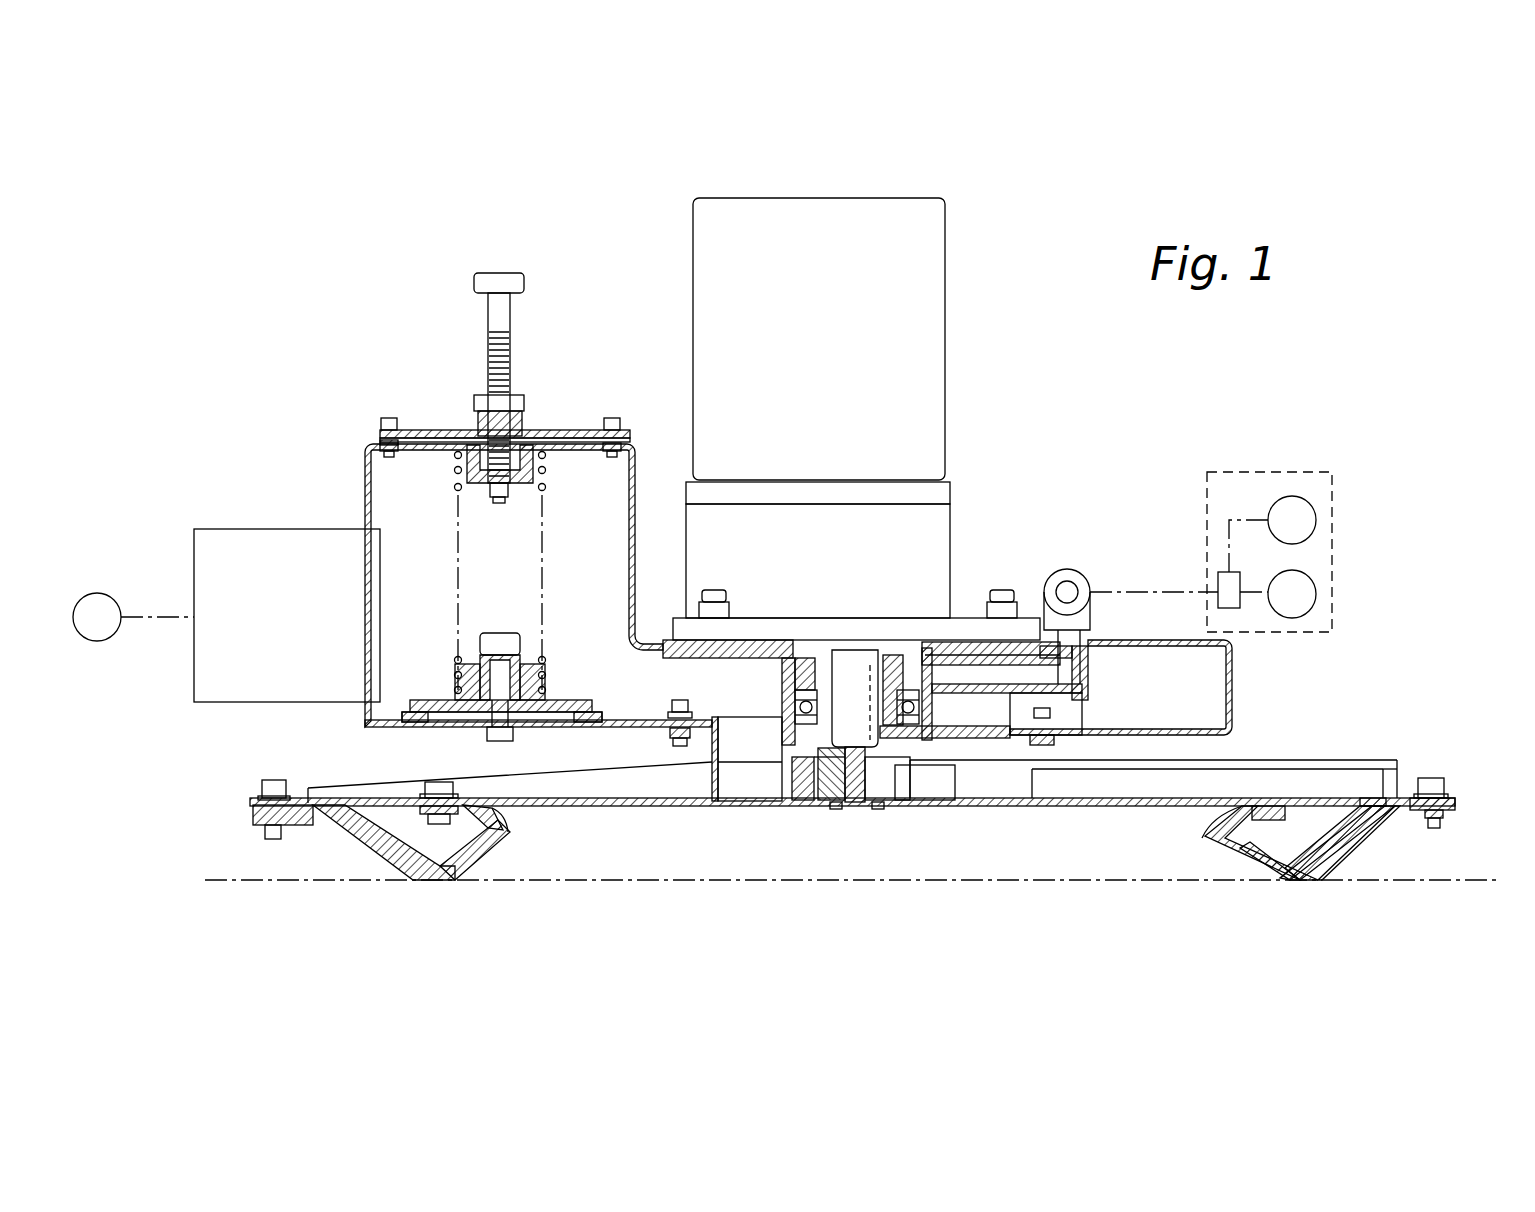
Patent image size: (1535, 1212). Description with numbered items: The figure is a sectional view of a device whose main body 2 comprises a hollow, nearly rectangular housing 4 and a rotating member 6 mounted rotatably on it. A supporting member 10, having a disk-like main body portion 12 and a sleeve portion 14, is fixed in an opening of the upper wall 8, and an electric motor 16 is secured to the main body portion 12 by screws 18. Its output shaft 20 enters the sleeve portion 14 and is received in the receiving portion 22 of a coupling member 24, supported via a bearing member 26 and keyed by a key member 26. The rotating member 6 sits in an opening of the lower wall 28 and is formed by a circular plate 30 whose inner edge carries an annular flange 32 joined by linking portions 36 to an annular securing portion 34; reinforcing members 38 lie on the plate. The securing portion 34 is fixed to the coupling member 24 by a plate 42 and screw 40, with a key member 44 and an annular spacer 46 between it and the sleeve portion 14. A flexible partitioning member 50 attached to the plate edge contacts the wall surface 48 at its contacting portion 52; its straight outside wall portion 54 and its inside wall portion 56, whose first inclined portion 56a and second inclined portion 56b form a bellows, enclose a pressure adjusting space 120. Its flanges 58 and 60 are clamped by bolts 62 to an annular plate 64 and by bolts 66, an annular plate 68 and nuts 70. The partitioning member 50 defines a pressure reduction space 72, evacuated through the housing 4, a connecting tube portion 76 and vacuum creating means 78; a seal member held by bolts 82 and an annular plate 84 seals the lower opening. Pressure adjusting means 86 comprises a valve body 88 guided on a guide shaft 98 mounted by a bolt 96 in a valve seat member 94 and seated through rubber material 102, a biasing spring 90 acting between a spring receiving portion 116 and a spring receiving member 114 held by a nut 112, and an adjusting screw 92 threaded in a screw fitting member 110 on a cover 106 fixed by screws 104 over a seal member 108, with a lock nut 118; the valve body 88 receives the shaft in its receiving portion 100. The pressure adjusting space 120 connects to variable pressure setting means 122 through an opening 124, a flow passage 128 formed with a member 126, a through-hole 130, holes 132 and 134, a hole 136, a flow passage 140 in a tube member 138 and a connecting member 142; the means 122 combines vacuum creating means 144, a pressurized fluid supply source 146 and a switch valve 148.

The main body 2 is at (1320, 688).
The housing 4 is at (1210, 737).
The rotating member 6 is at (1130, 806).
The upper wall 8 is at (1150, 640).
The supporting member 10 is at (760, 660).
The main body portion 12 is at (718, 660).
The sleeve portion 14 is at (932, 705).
The electric motor 16 is at (945, 378).
The screws 18 is at (722, 590).
The output shaft 20 is at (852, 750).
The receiving portion 22 is at (795, 720).
The coupling member 24 is at (790, 770).
The bearing member 26 is at (893, 690).
The lower wall 28 is at (1122, 735).
The circular plate 30 is at (1065, 805).
The annular flange 32 is at (712, 775).
The annular securing portion 34 is at (812, 795).
The linking portions 36 is at (730, 785).
The reinforcing members 38 is at (595, 771).
The screw 40 is at (850, 790).
The plate 42 is at (885, 790).
The key member 44 is at (825, 800).
The annular spacer 46 is at (905, 738).
The wall surface 48 is at (1480, 870).
The partitioning member 50 is at (1372, 850).
The contacting portion 52 is at (1280, 868).
The outside wall portion 54 is at (352, 858).
The inside wall portion 56 is at (500, 850).
The first inclined portion 56a is at (470, 850).
The second inclined portion 56b is at (510, 825).
The outside annular flange 58 is at (1455, 804).
The inside annular flange 60 is at (1270, 806).
The bolts 62 is at (1436, 778).
The annular plate 64 is at (1443, 820).
The bolts 66 is at (436, 822).
The annular plate 68 is at (420, 812).
The nuts 70 is at (460, 770).
The pressure reduction space 72 is at (1038, 883).
The connecting tube portion 76 is at (277, 528).
The vacuum creating means 78 is at (112, 596).
The bolts 82 is at (672, 702).
The annular plate 84 is at (672, 740).
The pressure adjusting means 86 is at (570, 599).
The valve body 88 is at (455, 672).
The biasing spring 90 is at (455, 658).
The adjusting screw 92 is at (512, 352).
The valve seat member 94 is at (418, 727).
The bolt 96 is at (512, 737).
The guide shaft 98 is at (490, 640).
The receiving portion 100 is at (522, 650).
The rubber material 102 is at (432, 705).
The screws 104 is at (389, 418).
The cover 106 is at (426, 430).
The seal member 108 is at (382, 444).
The screw fitting member 110 is at (522, 424).
The nut 112 is at (506, 490).
The spring receiving member 114 is at (540, 470).
The spring receiving portion 116 is at (558, 700).
The lock nut 118 is at (522, 402).
The pressure adjusting space 120 is at (1316, 866).
The variable pressure setting means 122 is at (1282, 472).
The opening 124 is at (1372, 806).
The member 126 is at (1358, 760).
The flow passage 128 is at (1100, 796).
The through-hole 130 is at (905, 782).
The hole 132 is at (872, 788).
The hole 134 is at (808, 660).
The hole 136 is at (893, 655).
The tube member 138 is at (1088, 690).
The flow passage 140 is at (1045, 745).
The connecting member 142 is at (1078, 572).
The vacuum creating means 144 is at (1316, 590).
The pressurized fluid supply source 146 is at (1316, 515).
The switch valve 148 is at (1218, 580).